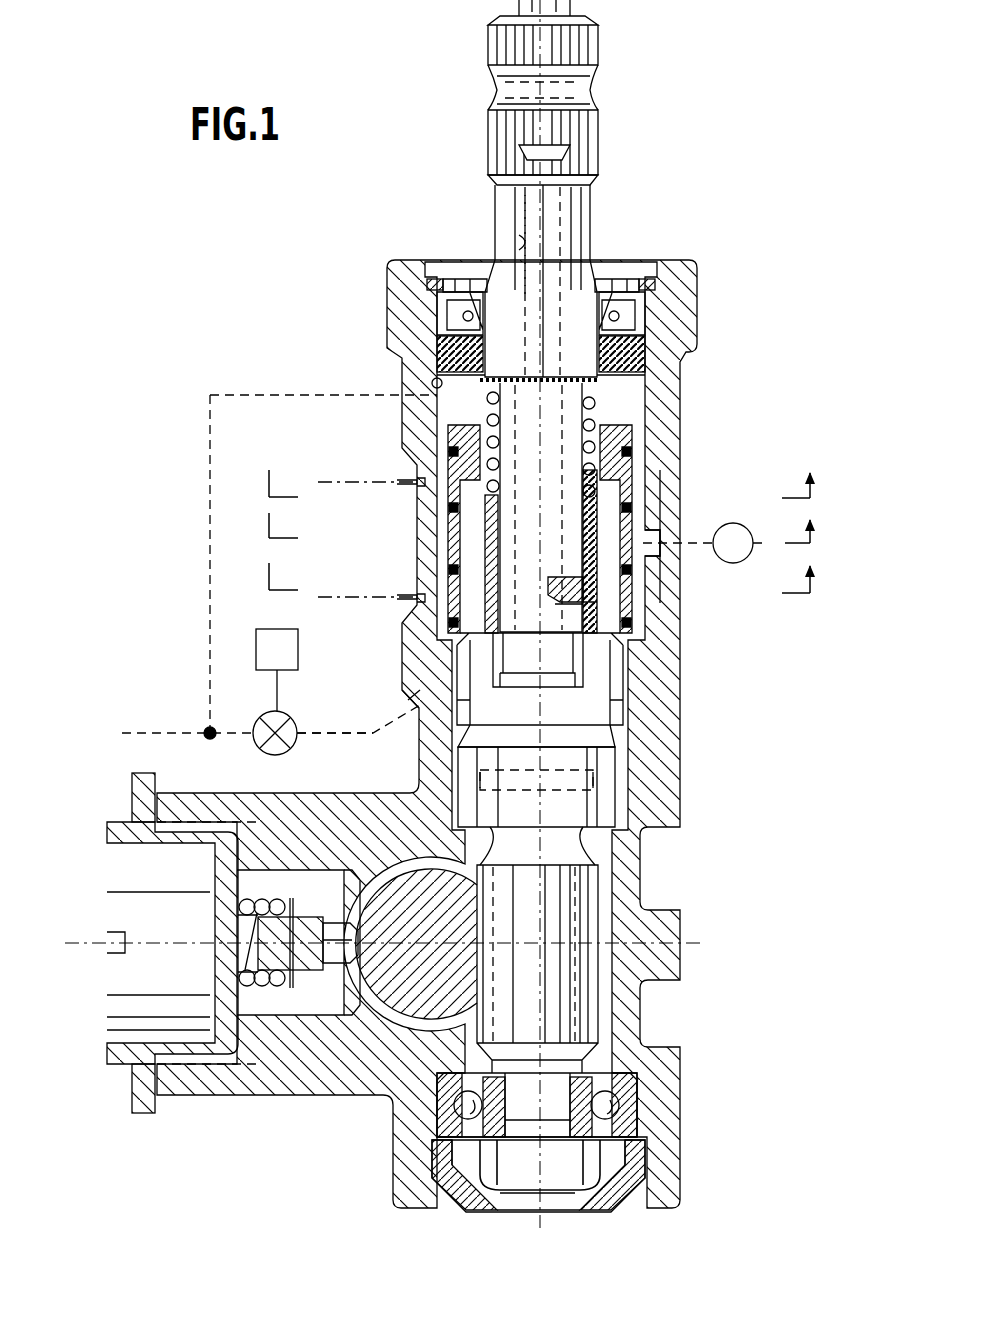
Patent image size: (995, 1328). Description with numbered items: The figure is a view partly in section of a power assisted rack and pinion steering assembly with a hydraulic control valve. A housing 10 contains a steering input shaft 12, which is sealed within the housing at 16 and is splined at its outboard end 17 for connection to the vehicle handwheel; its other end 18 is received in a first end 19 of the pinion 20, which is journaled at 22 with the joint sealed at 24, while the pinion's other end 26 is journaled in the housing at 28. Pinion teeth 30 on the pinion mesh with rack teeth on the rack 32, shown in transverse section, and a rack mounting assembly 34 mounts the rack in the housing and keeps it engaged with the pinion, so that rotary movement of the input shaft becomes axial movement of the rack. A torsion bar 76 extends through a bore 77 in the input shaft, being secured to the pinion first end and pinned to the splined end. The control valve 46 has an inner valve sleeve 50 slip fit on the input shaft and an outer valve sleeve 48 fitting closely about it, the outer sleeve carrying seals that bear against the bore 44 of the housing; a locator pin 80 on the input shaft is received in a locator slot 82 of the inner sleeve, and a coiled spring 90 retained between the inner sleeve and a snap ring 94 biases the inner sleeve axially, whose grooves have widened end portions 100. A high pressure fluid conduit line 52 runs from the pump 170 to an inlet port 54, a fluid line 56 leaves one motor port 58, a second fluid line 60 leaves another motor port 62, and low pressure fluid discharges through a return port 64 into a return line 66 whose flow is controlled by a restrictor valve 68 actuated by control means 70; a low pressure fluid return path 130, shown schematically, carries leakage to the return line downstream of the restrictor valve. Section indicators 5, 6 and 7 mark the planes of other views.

The housing 10 is at (405, 282).
The steering input shaft 12 is at (600, 208).
The seal 16 is at (620, 290).
The outboard end 17 is at (597, 148).
The other end 18 is at (560, 677).
The first end 19 is at (598, 703).
The pinion 20 is at (602, 918).
The journal 22 is at (603, 804).
The seal 24 is at (632, 738).
The other end 26 is at (557, 1095).
The journal 28 is at (612, 1107).
The pinion teeth 30 is at (568, 995).
The rack 32 is at (416, 968).
The rack mounting assembly 34 is at (288, 1016).
The bore 44 is at (432, 383).
The control valve 46 is at (429, 447).
The outer valve sleeve 48 is at (642, 427).
The inner valve sleeve 50 is at (602, 515).
The high pressure fluid conduit line 52 is at (688, 543).
The inlet port 54 is at (650, 548).
The fluid line 56 is at (384, 595).
The motor port 58 is at (417, 603).
The second fluid line 60 is at (384, 480).
The motor port 62 is at (418, 486).
The return port 64 is at (418, 716).
The return line 66 is at (366, 735).
The restrictor valve 68 is at (285, 715).
The control means 70 is at (277, 670).
The torsion bar 76 is at (540, 210).
The bore 77 is at (520, 233).
The locator pin 80 is at (584, 592).
The locator slot 82 is at (597, 628).
The coiled spring 90 is at (597, 398).
The snap ring 94 is at (600, 378).
The widened end portions 100 is at (582, 492).
The low pressure fluid return path 130 is at (292, 385).
The pump 170 is at (735, 563).
The section line 5 is at (537, 575).
The section line 6 is at (537, 526).
The section line 7 is at (537, 481).